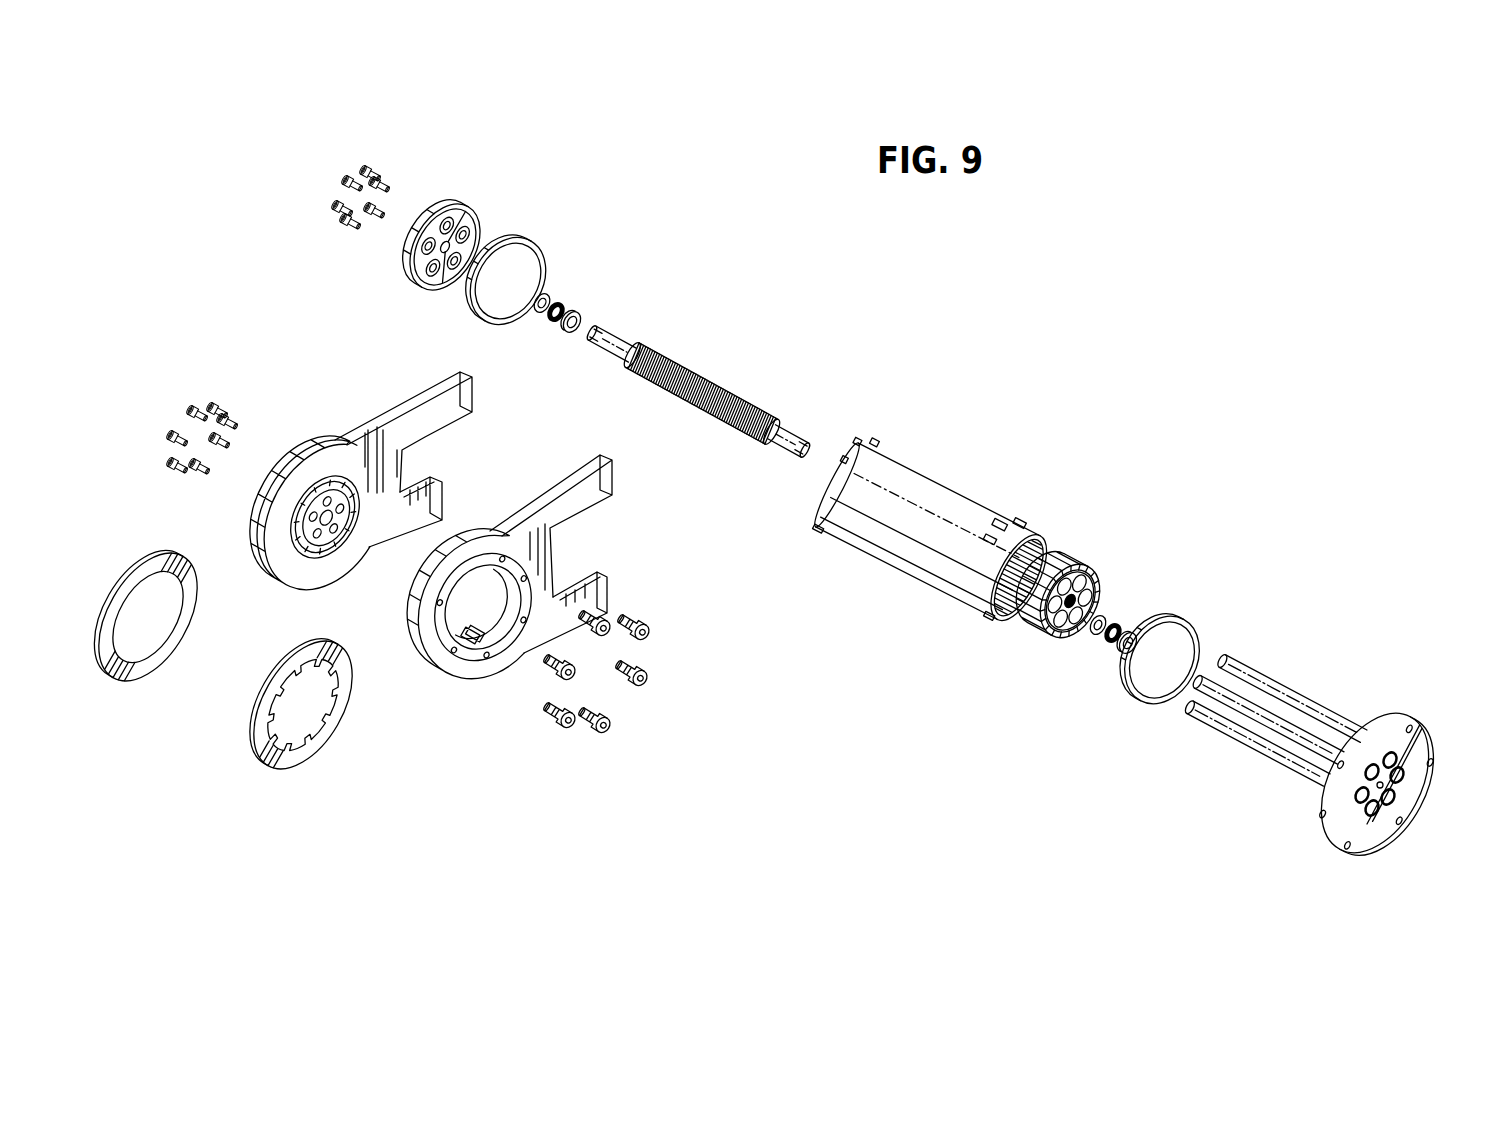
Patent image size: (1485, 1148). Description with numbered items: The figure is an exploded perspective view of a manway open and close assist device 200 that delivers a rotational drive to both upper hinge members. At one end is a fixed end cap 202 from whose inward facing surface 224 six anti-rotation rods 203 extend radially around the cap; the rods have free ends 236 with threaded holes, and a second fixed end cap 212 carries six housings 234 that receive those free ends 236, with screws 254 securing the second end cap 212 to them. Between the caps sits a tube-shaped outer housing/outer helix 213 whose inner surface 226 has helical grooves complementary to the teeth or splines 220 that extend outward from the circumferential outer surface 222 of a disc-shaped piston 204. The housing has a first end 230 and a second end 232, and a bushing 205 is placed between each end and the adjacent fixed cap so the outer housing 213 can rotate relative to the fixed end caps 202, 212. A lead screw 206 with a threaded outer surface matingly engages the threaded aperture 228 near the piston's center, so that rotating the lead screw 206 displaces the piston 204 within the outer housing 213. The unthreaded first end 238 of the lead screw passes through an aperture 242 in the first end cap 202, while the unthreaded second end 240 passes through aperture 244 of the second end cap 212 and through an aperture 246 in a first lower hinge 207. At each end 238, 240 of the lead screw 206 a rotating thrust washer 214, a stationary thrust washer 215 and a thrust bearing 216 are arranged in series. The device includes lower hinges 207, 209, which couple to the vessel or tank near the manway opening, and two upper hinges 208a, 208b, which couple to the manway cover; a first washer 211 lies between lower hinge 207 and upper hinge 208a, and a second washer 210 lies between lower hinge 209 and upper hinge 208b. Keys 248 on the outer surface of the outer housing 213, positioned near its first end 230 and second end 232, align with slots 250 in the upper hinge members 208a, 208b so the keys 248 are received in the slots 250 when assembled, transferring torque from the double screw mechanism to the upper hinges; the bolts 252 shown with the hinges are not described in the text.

The manway open and close assist device 200 is at (832, 281).
The fixed end cap 202 is at (1385, 767).
The anti-rotation rods 203 is at (1273, 696).
The disc-shaped piston 204 is at (1094, 584).
The bushing 205 is at (535, 255).
The lead screw 206 is at (699, 403).
The first lower hinge 207 is at (405, 512).
The upper hinge 208a is at (362, 477).
The upper hinge 208b is at (527, 545).
The lower hinge 209 is at (565, 612).
The second washer 210 is at (312, 757).
The first washer 211 is at (165, 670).
The second fixed end cap 212 is at (460, 227).
The outer housing/outer helix 213 is at (935, 513).
The rotating thrust washer 214 is at (583, 315).
The stationary thrust washer 215 is at (545, 292).
The thrust bearing 216 is at (565, 302).
The teeth or splines 220 is at (1057, 594).
The circumferential outer surface 222 is at (1084, 584).
The inward facing surface 224 is at (1377, 784).
The inner surface 226 is at (1019, 578).
The threaded aperture 228 is at (1050, 640).
The first end 230 is at (1070, 601).
The second end 232 is at (930, 480).
The housings 234 is at (425, 208).
The free ends 236 is at (1290, 690).
The first end 238 is at (790, 442).
The second end 240 is at (611, 344).
The aperture 242 is at (1385, 805).
The aperture 244 is at (462, 234).
The aperture 246 is at (326, 517).
The keys 248 is at (1004, 531).
The slots 250 is at (345, 553).
The bolts 252 is at (212, 405).
The screws 254 is at (365, 170).